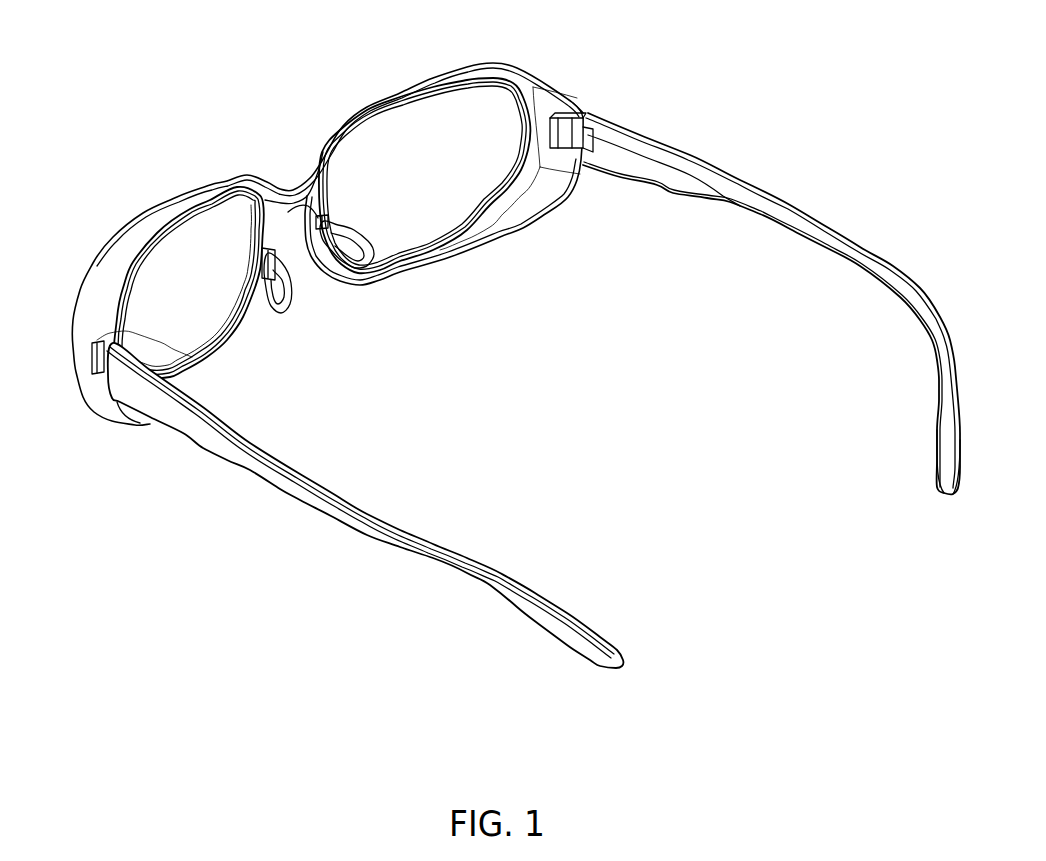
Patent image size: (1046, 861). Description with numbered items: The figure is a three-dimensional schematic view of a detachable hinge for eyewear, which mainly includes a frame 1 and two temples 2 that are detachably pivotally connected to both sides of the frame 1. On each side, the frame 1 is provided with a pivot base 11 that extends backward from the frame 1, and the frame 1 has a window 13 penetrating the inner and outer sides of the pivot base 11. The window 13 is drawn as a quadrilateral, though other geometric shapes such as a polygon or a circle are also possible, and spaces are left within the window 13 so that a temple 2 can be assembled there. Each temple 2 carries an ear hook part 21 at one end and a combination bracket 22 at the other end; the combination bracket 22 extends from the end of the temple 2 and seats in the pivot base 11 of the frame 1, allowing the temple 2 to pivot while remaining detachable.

The frame 1 is at (396, 93).
The pivot base 11 is at (573, 99).
The window 13 is at (224, 363).
The temple 2 is at (674, 150).
The ear hook part 21 is at (939, 420).
The combination bracket 22 is at (549, 118).